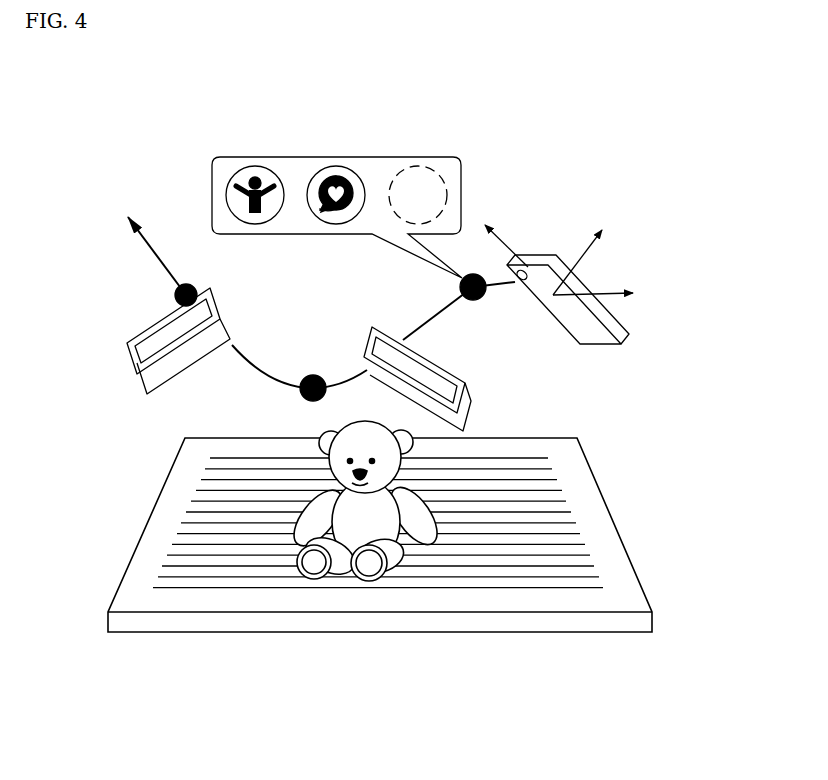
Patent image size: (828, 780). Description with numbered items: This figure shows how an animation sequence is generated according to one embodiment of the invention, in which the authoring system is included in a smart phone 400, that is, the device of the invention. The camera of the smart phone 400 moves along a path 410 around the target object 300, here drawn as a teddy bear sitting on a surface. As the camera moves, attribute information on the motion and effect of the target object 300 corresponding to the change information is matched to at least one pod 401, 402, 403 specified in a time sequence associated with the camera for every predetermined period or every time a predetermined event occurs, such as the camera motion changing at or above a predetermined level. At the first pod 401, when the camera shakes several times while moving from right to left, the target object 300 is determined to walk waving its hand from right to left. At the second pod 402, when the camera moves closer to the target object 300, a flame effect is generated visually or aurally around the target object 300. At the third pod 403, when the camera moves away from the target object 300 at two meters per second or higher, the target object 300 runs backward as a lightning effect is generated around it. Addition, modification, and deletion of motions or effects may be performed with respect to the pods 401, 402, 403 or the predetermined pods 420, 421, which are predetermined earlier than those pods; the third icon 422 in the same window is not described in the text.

The target object 300 is at (400, 558).
The smart phone 400 is at (127, 340).
The first pod 401 is at (479, 300).
The second pod 402 is at (297, 392).
The third pod 403 is at (173, 290).
The path 410 is at (132, 230).
The predetermined pod 420 is at (307, 172).
The predetermined pod 421 is at (260, 173).
The second guide icon 422 is at (344, 173).